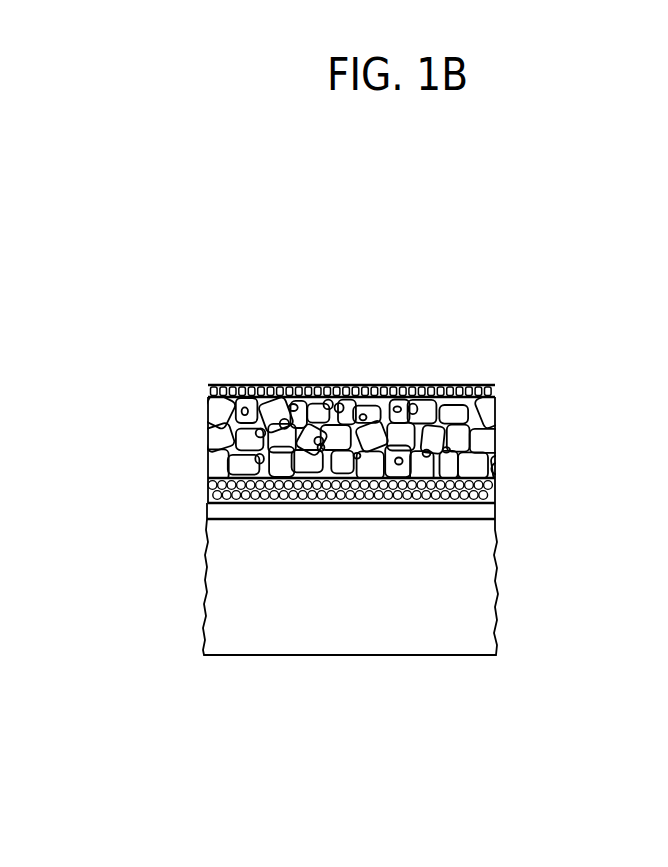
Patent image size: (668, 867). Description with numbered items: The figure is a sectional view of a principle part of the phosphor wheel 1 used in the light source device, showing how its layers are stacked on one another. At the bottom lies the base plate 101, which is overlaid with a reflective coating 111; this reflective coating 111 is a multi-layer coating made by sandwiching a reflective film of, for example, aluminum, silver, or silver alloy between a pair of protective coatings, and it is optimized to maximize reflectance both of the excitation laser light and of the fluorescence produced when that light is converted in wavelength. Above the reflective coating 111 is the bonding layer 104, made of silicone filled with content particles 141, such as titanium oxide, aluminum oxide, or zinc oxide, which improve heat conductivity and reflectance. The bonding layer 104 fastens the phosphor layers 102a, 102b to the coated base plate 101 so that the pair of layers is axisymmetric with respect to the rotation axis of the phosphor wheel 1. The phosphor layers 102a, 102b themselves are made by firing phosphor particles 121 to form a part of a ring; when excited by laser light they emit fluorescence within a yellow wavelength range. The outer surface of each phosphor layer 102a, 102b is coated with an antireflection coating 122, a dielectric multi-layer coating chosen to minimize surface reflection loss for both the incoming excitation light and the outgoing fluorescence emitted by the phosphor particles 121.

The phosphor wheel 1 is at (372, 338).
The antireflection coating 122 is at (210, 393).
The phosphor particles 121 is at (482, 433).
The phosphor layer 102a is at (493, 457).
The phosphor layer 102b is at (371, 437).
The bonding layer 104 is at (217, 492).
The content particles 141 is at (487, 495).
The reflective coating 111 is at (472, 512).
The base plate 101 is at (472, 588).